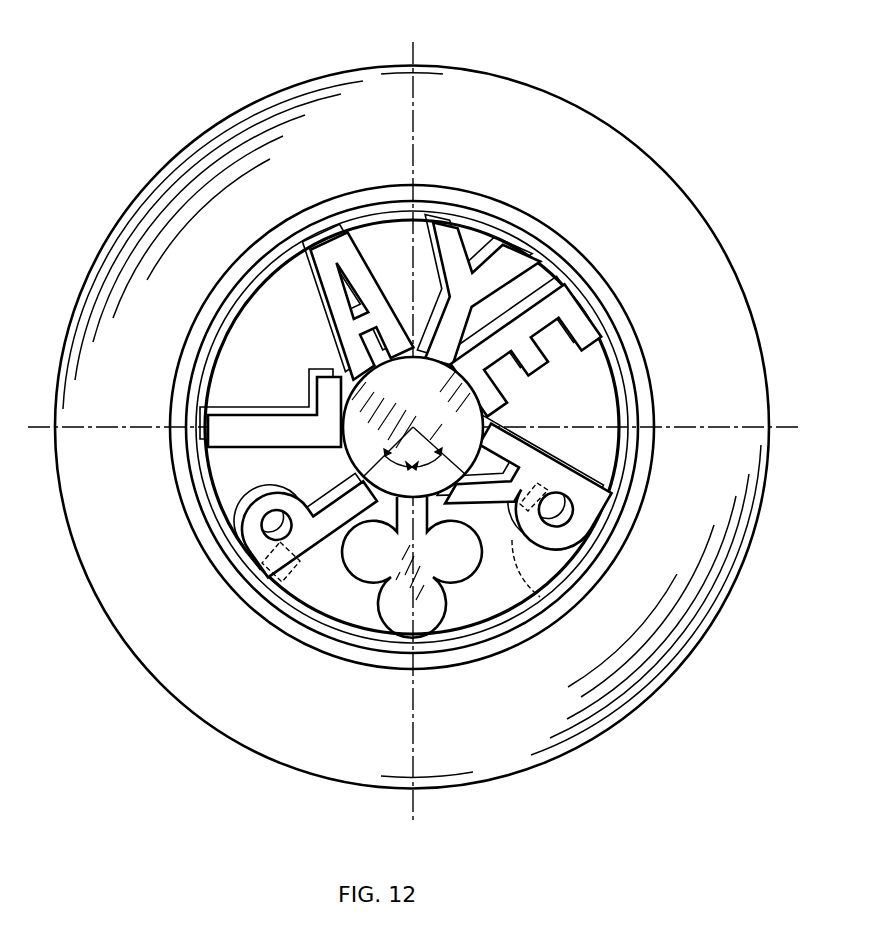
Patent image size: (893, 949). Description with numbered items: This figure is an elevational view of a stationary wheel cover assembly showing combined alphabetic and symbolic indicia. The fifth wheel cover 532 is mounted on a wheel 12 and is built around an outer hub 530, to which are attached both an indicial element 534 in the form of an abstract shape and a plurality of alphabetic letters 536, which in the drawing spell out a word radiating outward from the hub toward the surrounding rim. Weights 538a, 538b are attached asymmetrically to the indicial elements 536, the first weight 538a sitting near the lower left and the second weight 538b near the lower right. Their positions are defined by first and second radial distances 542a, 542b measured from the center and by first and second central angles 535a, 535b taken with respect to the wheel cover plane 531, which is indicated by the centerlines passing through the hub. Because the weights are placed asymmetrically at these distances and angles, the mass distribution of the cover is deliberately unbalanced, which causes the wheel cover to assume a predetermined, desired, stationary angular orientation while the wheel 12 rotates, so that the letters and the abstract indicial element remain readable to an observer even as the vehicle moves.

The wheel 12 is at (625, 540).
The outer hub 530 is at (350, 378).
The wheel cover plane 531 is at (415, 50).
The fifth wheel cover 532 is at (572, 268).
The indicial element 534 is at (418, 603).
The first central angle 535a is at (356, 568).
The second central angle 535b is at (475, 563).
The alphabetic letters 536 is at (312, 270).
The first weight 538a is at (262, 563).
The second weight 538b is at (553, 595).
The first radial distance 542a is at (386, 470).
The second radial distance 542b is at (518, 430).